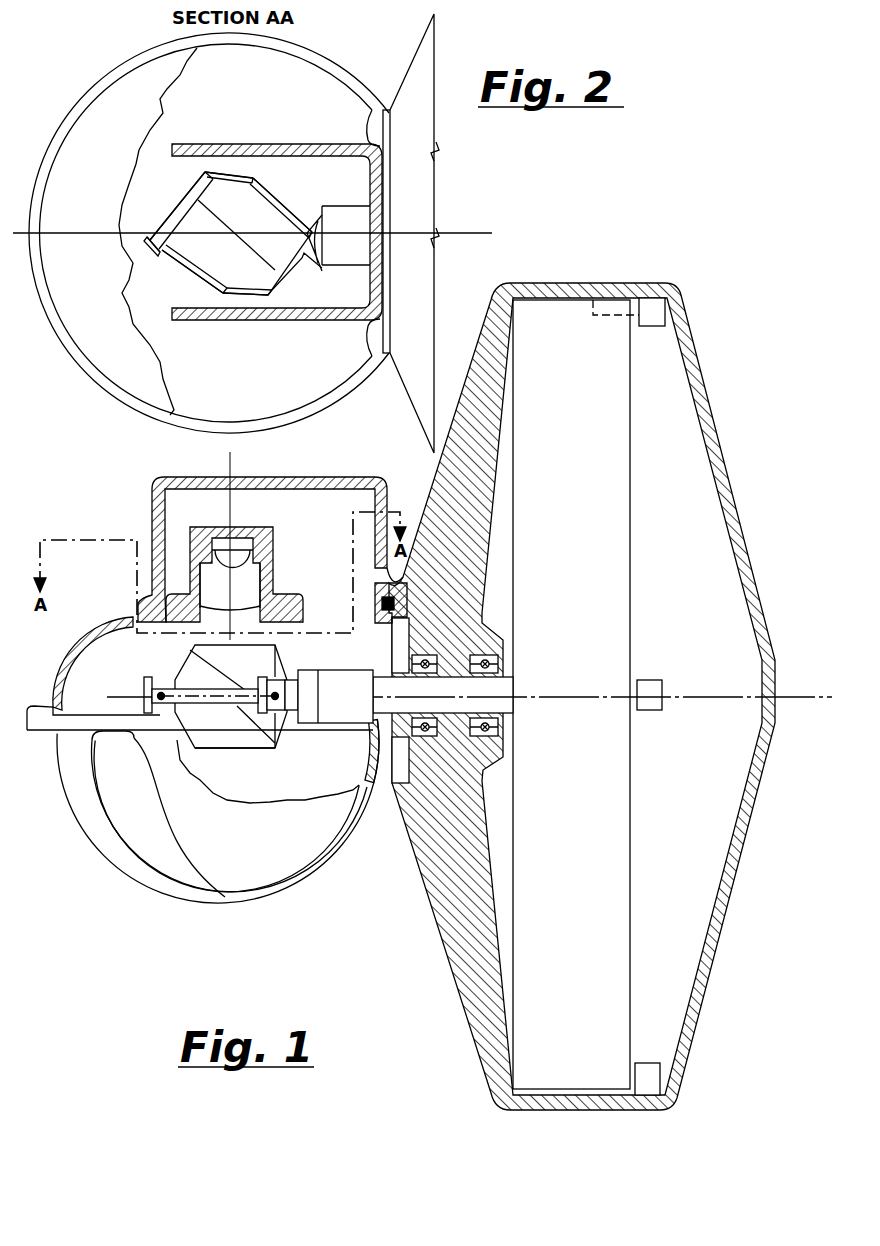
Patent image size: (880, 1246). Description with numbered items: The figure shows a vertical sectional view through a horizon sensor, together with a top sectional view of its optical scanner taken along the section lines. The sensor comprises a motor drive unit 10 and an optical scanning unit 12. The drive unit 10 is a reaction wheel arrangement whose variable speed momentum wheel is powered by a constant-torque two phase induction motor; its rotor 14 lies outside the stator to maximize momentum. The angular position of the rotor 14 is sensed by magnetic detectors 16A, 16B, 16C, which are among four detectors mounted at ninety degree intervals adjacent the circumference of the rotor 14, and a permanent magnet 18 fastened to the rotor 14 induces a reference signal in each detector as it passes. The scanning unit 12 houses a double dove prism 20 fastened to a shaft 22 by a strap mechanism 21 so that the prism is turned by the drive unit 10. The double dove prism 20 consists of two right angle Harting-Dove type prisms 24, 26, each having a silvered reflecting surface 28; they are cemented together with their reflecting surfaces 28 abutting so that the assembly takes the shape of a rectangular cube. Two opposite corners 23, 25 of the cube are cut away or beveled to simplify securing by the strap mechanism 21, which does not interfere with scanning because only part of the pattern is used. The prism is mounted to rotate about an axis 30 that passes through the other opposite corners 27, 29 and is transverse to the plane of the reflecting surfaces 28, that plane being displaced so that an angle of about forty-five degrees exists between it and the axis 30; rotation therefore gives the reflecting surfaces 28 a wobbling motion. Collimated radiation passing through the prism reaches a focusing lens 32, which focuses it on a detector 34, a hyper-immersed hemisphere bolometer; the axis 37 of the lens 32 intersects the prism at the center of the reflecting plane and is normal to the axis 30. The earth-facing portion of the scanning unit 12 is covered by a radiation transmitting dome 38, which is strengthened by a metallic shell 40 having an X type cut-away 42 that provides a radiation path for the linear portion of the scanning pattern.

In FIG. 1, the motor drive unit 10 is at (572, 282).
In FIG. 2, the optical scanning unit 12 is at (204, 142).
In FIG. 1, the optical scanning unit 12 is at (150, 487).
In FIG. 1, the rotor 14 is at (636, 522).
In FIG. 1, the magnetic detector 16A is at (666, 313).
In FIG. 1, the magnetic detector 16B is at (662, 672).
In FIG. 1, the magnetic detector 16C is at (640, 1062).
In FIG. 1, the permanent magnet 18 is at (608, 298).
In FIG. 2, the double dove prism 20 is at (184, 205).
In FIG. 1, the double dove prism 20 is at (172, 670).
In FIG. 2, the strap mechanism 21 is at (158, 254).
In FIG. 1, the strap mechanism 21 is at (214, 708).
In FIG. 1, the shaft 22 is at (450, 672).
In FIG. 2, the cut-away corner 23 is at (241, 291).
In FIG. 1, the cut-away corner 23 is at (236, 687).
In FIG. 2, the right angle Harting-Dove prism 24 is at (193, 266).
In FIG. 1, the right angle Harting-Dove prism 24 is at (248, 740).
In FIG. 2, the cut-away corner 25 is at (240, 170).
In FIG. 2, the right angle Harting-Dove prism 26 is at (292, 197).
In FIG. 1, the right angle Harting-Dove prism 26 is at (323, 654).
In FIG. 2, the cube corner 27 is at (318, 272).
In FIG. 2, the reflecting surface 28 is at (226, 219).
In FIG. 1, the reflecting surface 28 is at (312, 740).
In FIG. 2, the cube corner 29 is at (157, 233).
In FIG. 2, the axis of rotation 30 is at (452, 228).
In FIG. 1, the axis of rotation 30 is at (506, 692).
In FIG. 1, the focusing lens 32 is at (230, 604).
In FIG. 1, the detector 34 is at (234, 560).
In FIG. 1, the axis of the lens 37 is at (272, 466).
In FIG. 1, the radiation transmitting dome 38 is at (127, 893).
In FIG. 1, the metallic shell 40 is at (107, 857).
In FIG. 1, the X type cut-away 42 is at (153, 860).